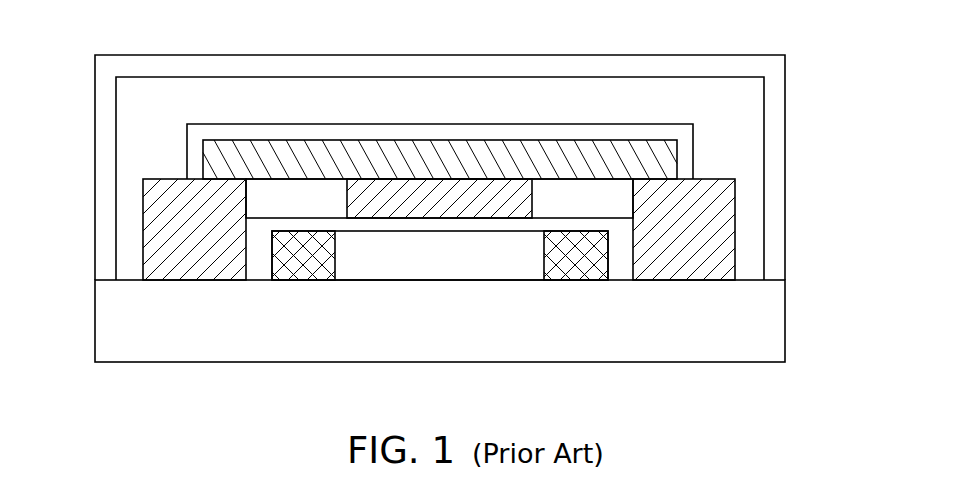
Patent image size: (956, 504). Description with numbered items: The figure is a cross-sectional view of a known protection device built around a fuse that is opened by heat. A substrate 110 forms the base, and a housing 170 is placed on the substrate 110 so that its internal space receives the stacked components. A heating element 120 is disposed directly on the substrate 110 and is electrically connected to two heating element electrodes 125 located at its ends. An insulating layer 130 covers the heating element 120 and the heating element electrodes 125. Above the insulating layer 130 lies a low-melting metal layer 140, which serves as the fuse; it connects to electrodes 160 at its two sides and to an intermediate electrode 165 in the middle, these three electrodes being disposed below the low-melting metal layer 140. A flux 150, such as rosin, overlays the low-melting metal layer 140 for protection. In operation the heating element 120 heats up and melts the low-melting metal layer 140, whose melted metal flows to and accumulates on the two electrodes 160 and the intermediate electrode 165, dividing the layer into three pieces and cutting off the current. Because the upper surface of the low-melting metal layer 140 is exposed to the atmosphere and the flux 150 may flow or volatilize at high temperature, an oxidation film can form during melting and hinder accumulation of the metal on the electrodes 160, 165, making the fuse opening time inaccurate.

The substrate 110 is at (777, 323).
The heating element 120 is at (498, 268).
The heating element electrodes 125 is at (573, 270).
The insulating layer 130 is at (403, 223).
The low-melting metal layer 140 is at (612, 150).
The flux 150 is at (461, 131).
The electrodes 160 is at (728, 219).
The intermediate electrode 165 is at (378, 188).
The housing 170 is at (777, 73).